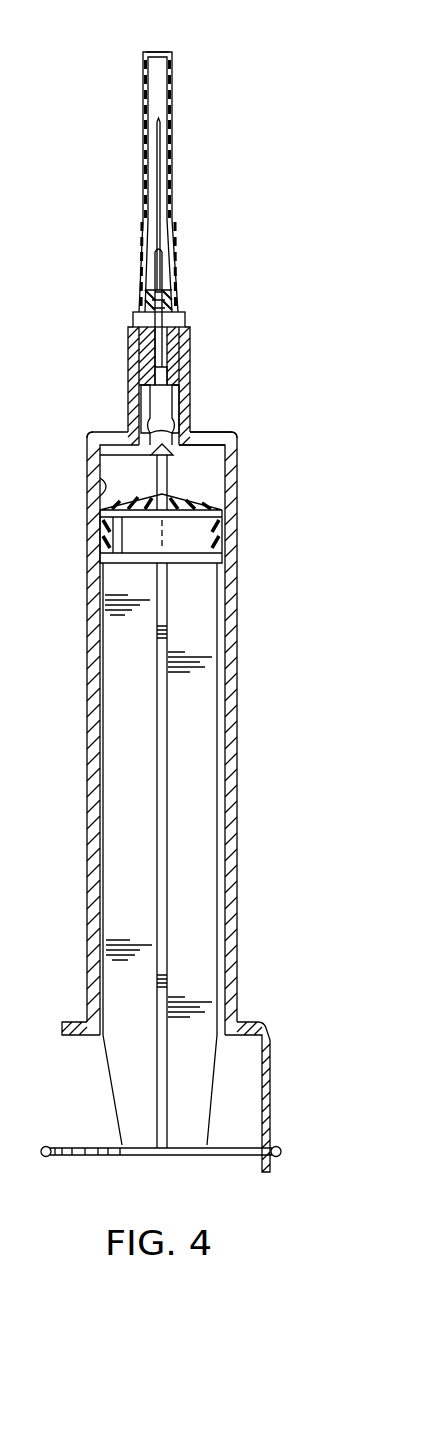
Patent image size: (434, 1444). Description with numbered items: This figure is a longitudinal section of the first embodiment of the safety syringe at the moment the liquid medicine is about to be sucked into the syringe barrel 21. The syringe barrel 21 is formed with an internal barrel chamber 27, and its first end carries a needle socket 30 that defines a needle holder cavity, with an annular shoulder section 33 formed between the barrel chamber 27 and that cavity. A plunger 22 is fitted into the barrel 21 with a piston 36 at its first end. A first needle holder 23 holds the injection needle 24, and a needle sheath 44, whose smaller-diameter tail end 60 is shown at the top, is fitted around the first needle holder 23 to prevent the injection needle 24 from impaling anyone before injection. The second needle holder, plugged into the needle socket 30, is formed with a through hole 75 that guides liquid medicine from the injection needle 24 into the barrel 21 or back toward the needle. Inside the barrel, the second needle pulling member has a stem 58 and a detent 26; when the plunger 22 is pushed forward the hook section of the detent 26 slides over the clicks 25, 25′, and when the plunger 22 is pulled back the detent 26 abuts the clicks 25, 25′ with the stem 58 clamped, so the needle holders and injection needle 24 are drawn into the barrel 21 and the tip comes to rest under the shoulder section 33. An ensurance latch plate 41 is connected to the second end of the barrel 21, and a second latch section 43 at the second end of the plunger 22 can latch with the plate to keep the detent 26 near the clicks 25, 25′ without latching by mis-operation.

The tail end of needle sheath 60 is at (158, 55).
The needle sheath 44 is at (170, 100).
The injection needle 24 is at (160, 168).
The first needle holder 23 is at (167, 288).
The needle socket 30 is at (193, 367).
The through hole 75 is at (156, 395).
The click 25 is at (146, 412).
The click 25′ is at (177, 412).
The annular shoulder section 33 is at (213, 446).
The stem 58 is at (166, 477).
The detent 26 is at (100, 455).
The barrel chamber 27 is at (100, 494).
The piston 36 is at (223, 540).
The syringe barrel 21 is at (233, 660).
The plunger 22 is at (199, 733).
The ensurance latch plate 41 is at (270, 1063).
The second latch section 43 is at (281, 1147).